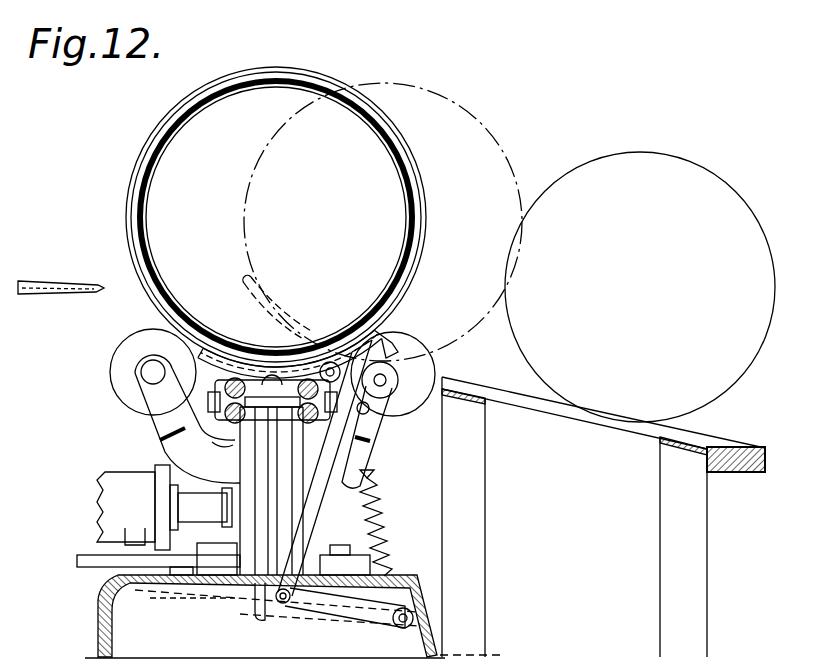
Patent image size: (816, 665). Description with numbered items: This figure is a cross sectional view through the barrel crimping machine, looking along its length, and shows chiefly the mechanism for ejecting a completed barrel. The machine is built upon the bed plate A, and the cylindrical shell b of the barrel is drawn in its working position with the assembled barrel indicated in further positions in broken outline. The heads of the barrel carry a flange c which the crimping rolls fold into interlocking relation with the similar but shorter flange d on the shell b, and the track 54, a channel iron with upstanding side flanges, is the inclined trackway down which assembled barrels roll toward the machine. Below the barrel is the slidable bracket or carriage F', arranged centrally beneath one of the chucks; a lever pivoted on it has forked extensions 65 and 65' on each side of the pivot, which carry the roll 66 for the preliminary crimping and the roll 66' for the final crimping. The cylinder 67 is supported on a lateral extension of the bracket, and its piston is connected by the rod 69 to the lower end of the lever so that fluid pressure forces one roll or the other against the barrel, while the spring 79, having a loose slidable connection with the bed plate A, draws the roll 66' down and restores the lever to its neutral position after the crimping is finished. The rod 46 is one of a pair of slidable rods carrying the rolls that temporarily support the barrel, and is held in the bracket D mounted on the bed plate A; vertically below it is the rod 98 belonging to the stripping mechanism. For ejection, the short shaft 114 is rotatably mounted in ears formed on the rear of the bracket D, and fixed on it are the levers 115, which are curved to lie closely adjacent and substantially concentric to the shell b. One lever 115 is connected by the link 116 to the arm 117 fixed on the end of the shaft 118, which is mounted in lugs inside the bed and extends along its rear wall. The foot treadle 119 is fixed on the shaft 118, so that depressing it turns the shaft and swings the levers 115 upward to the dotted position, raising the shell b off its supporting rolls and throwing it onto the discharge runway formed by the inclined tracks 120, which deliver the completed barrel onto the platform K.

The cylindrical shell b is at (140, 222).
The flange of head c is at (125, 226).
The flange of shell d is at (133, 248).
The track 54 is at (44, 297).
The rod 46 is at (238, 386).
The lever 115 is at (281, 368).
The short shaft 114 is at (333, 362).
The slidable bracket or carriage F' is at (272, 475).
The roll 66 is at (136, 372).
The forked extension 65 is at (177, 419).
The rod 98 is at (216, 456).
The roll 66' is at (413, 374).
The forked extension 65' is at (380, 437).
The link 116 is at (319, 514).
The spring 79 is at (383, 512).
The arm 117 is at (333, 605).
The shaft 118 is at (397, 628).
The bracket D is at (252, 617).
The bed plate A is at (105, 620).
The foot treadle 119 is at (213, 600).
The cylinder 67 is at (107, 510).
The rod 69 is at (203, 507).
The track 120 is at (563, 410).
The platform K is at (756, 447).